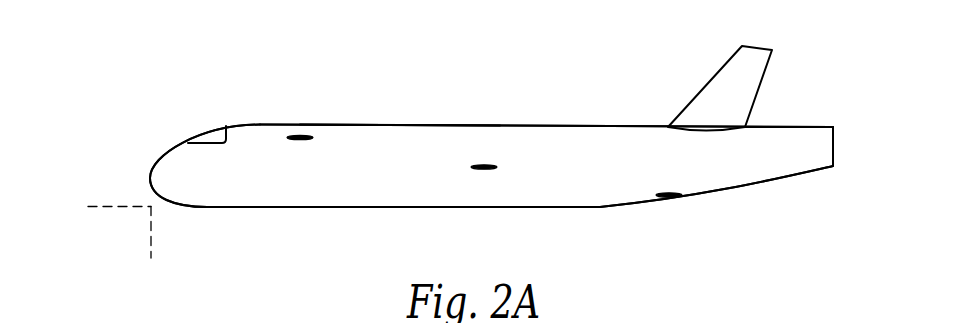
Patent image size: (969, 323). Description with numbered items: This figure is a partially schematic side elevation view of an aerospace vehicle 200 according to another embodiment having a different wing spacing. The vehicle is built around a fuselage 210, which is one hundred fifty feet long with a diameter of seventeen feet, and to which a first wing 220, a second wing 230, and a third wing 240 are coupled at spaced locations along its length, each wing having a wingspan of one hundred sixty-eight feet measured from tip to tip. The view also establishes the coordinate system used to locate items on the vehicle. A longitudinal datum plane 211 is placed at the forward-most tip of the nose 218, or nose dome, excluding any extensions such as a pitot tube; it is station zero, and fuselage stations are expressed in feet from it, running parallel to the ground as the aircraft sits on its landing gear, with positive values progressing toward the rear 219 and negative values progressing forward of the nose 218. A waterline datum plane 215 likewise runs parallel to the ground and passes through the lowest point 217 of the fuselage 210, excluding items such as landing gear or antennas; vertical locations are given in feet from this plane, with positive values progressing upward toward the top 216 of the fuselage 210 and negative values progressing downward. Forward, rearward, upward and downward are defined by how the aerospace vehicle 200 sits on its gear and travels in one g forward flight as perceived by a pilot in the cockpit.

The aerospace vehicle 200 is at (219, 68).
The fuselage 210 is at (477, 124).
The longitudinal datum plane 211 is at (148, 232).
The waterline datum plane 215 is at (114, 205).
The top of the fuselage 216 is at (394, 116).
The lowest point of the fuselage 217 is at (367, 221).
The nose 218 is at (136, 164).
The rear 219 is at (856, 147).
The first wing 220 is at (300, 140).
The second wing 230 is at (483, 170).
The third wing 240 is at (658, 192).